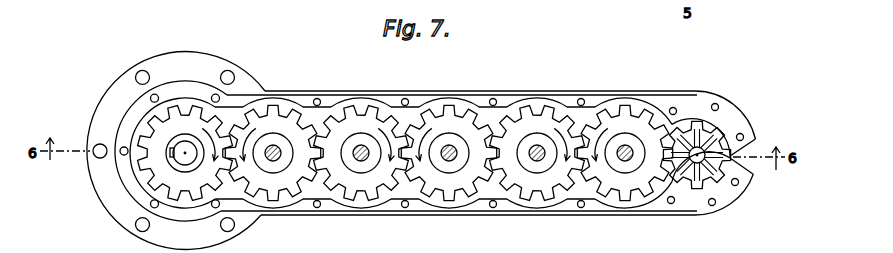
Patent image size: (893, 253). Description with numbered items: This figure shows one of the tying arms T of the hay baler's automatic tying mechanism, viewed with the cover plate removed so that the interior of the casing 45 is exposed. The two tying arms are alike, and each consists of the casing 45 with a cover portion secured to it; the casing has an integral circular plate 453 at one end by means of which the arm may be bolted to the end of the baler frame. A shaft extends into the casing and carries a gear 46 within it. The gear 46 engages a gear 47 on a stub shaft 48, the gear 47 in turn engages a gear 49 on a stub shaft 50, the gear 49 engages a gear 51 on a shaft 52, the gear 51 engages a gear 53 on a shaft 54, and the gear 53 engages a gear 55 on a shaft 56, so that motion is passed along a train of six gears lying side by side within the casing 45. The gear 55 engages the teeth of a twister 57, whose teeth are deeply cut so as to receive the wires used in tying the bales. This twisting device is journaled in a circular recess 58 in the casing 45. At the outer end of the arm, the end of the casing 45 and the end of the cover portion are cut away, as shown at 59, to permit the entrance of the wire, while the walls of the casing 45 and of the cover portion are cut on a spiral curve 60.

The integral circular plate 453 is at (177, 59).
The casing 45 is at (690, 203).
The gear 46 is at (160, 157).
The gear 47 is at (273, 122).
The stub shaft 48 is at (278, 162).
The gear 49 is at (377, 110).
The stub shaft 50 is at (365, 162).
The gear 51 is at (443, 127).
The shaft 52 is at (448, 163).
The gear 53 is at (527, 122).
The shaft 54 is at (537, 163).
The gear 55 is at (626, 120).
The shaft 56 is at (623, 163).
The twister 57 is at (705, 134).
The circular recess 58 is at (697, 127).
The cut-away portion 59 is at (747, 167).
The spiral curve 60 is at (714, 138).
The tying arm T is at (337, 91).